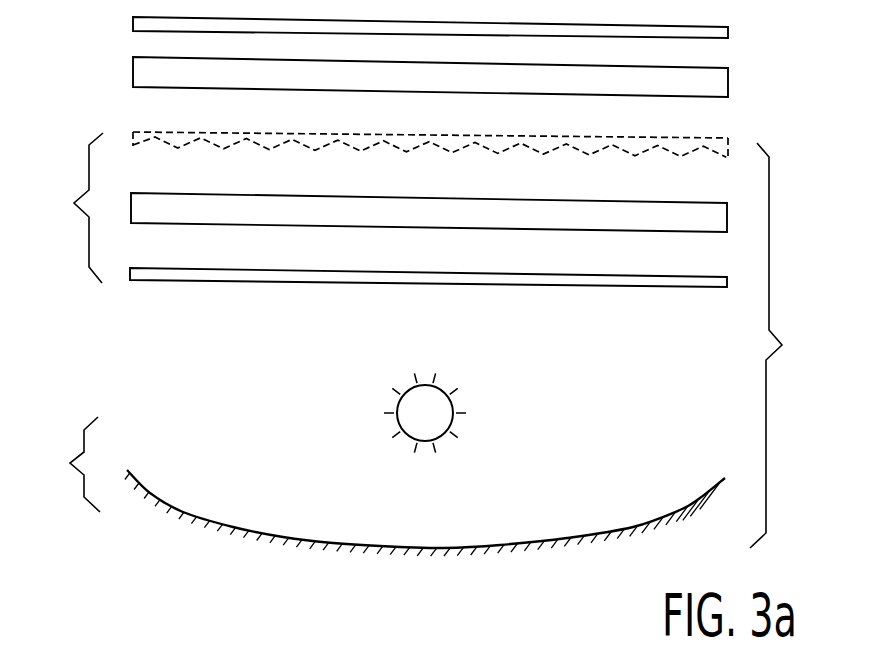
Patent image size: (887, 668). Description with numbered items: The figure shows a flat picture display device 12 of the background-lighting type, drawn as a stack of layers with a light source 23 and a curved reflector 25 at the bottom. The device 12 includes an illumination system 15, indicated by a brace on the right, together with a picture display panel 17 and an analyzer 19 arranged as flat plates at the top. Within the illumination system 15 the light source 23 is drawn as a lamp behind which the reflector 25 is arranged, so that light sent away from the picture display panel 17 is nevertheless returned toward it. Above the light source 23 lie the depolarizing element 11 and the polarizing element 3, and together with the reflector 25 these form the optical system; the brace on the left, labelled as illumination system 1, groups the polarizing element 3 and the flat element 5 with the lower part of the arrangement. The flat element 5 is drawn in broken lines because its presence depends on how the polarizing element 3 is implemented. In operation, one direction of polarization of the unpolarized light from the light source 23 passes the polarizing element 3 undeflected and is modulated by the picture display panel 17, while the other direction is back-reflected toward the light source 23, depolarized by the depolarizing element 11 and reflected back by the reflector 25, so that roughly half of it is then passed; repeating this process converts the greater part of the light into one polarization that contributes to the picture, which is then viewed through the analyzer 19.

The illumination system 1 is at (80, 453).
The polarizing element 3 is at (713, 220).
The flat element 5 is at (728, 141).
The depolarizing element 11 is at (705, 287).
The flat picture display device 12 is at (142, 578).
The illumination system 15 is at (782, 345).
The picture display panel 17 is at (715, 79).
The analyzer 19 is at (718, 33).
The light source 23 is at (445, 412).
The reflector 25 is at (148, 491).